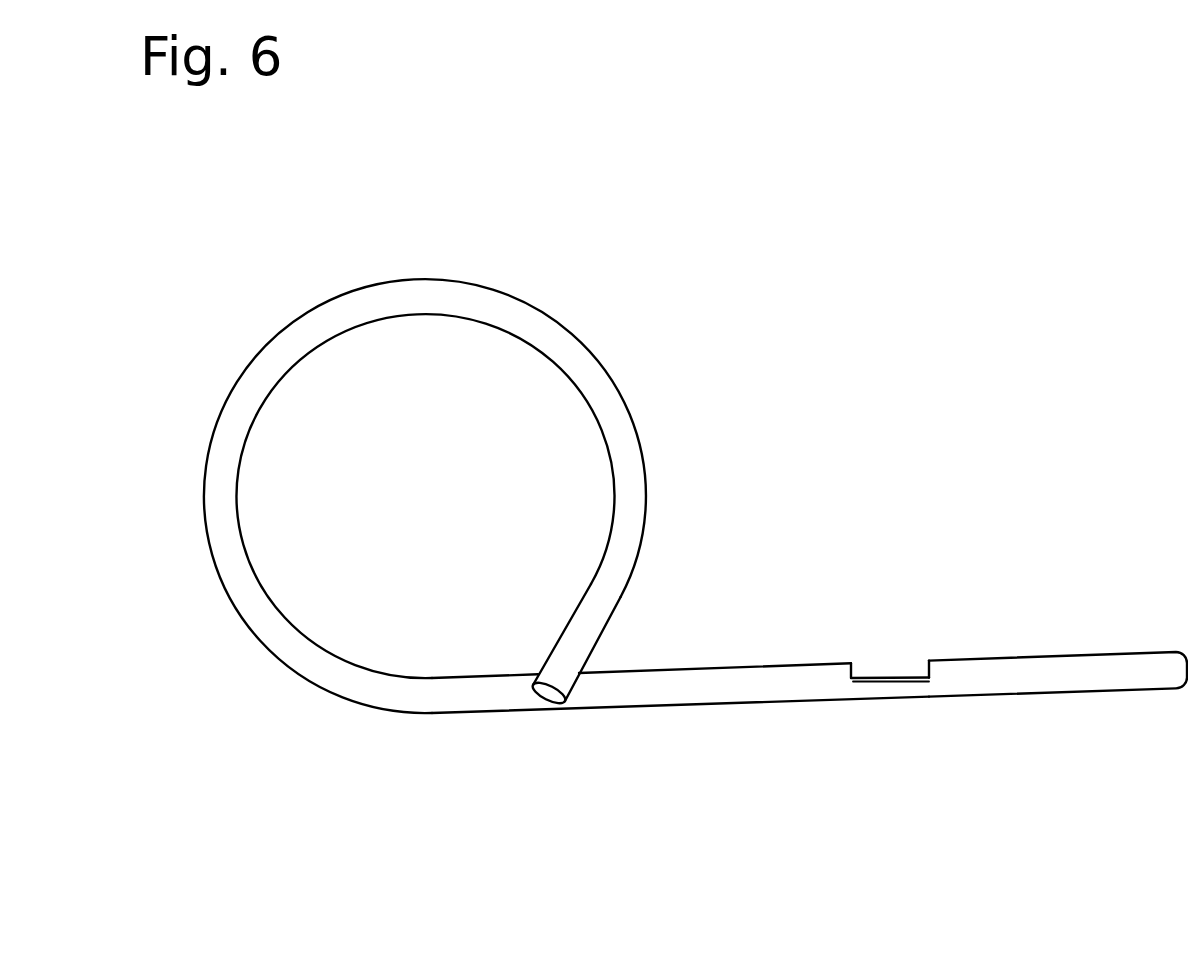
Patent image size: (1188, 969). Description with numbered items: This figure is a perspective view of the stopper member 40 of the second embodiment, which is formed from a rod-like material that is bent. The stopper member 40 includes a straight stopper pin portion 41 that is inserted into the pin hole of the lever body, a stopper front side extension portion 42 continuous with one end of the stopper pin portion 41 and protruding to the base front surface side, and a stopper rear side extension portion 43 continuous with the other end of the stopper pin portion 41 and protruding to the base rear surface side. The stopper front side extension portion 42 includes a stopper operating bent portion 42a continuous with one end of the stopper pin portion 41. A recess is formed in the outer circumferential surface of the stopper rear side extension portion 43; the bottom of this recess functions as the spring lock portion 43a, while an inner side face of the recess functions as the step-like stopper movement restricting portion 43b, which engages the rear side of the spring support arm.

The stopper member 40 is at (213, 270).
The stopper pin portion 41 is at (753, 685).
The stopper front side extension portion 42 is at (381, 722).
The stopper operating bent portion 42a is at (432, 298).
The stopper rear side extension portion 43 is at (1045, 708).
The spring lock portion 43a is at (895, 678).
The stopper movement restricting portion 43b is at (927, 660).